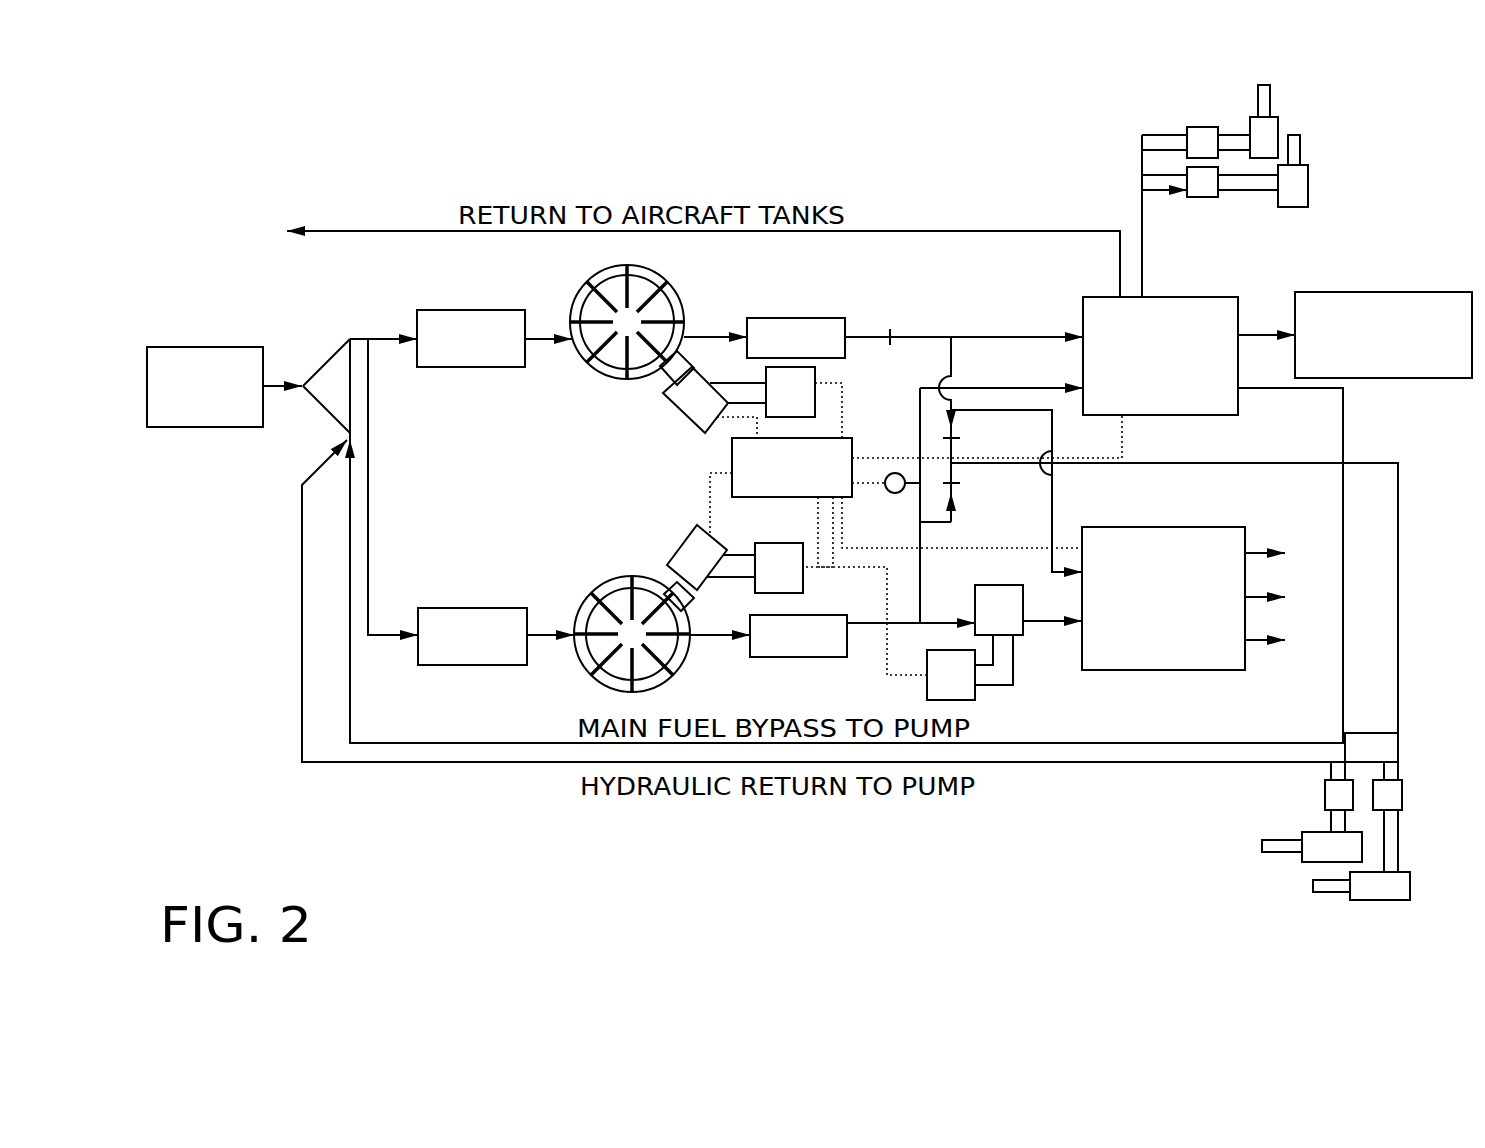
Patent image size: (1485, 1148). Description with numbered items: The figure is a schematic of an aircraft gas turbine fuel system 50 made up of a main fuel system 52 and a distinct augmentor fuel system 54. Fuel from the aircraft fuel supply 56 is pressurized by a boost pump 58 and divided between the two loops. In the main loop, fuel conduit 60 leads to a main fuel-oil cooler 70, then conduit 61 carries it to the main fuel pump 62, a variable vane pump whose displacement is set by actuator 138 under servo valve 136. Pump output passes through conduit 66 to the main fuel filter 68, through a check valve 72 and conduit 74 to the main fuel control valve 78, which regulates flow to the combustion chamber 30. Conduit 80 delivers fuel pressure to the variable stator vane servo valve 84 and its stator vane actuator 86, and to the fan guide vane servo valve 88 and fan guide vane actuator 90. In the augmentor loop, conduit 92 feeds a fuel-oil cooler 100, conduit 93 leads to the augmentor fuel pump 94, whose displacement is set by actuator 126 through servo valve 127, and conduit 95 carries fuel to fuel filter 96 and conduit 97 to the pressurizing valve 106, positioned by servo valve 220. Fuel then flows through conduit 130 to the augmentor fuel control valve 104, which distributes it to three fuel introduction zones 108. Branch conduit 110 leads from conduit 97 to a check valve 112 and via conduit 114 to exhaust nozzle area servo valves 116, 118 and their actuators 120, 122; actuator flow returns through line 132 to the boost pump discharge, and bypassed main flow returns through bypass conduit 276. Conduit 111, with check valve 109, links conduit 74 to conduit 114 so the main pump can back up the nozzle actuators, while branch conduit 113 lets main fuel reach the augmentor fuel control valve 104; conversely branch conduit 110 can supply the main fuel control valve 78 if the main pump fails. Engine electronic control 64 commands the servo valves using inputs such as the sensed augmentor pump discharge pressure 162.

The combustion chamber 30 is at (1402, 290).
The fuel system 50 is at (338, 158).
The main fuel system 52 is at (262, 290).
The augmentor fuel system 54 is at (265, 612).
The fuel supply 56 is at (177, 347).
The boost pump 58 is at (322, 408).
The fuel conduit 60 is at (382, 338).
The conduit 61 is at (538, 345).
The main fuel pump 62 is at (663, 283).
The engine electronic control 64 is at (732, 450).
The conduit 66 is at (702, 336).
The main fuel filter 68 is at (820, 318).
The main fuel-oil cooler 70 is at (478, 310).
The check valve 72 is at (852, 340).
The conduit 74 is at (995, 337).
The main fuel control valve 78 is at (1200, 296).
The conduit 80 is at (1143, 243).
The variable stator vane servo valve 84 is at (1200, 127).
The compressor stator vane actuator 86 is at (1280, 122).
The fan guide vane servo valve 88 is at (1203, 198).
The fan guide vane actuator 90 is at (1310, 180).
The conduit 92 is at (369, 478).
The conduit 93 is at (543, 630).
The augmentor fuel pump 94 is at (603, 582).
The conduit 95 is at (703, 634).
The fuel filter 96 is at (795, 657).
The conduit 97 is at (873, 622).
The fuel-oil cooler 100 is at (477, 606).
The augmentor fuel control valve 104 is at (1178, 527).
The pressurizing valve 106 is at (1012, 585).
The fuel introduction zones 108 is at (1250, 592).
The check valve 109 is at (953, 415).
The branch conduit 110 is at (920, 422).
The conduit 111 is at (953, 362).
The check valve 112 is at (953, 498).
The branch conduit 113 is at (1053, 498).
The conduit 114 is at (1215, 462).
The exhaust nozzle area servo valve 116 is at (1405, 795).
The exhaust nozzle area servo valve 118 is at (1325, 793).
The actuator 120 is at (1362, 900).
The actuator 122 is at (1308, 862).
The actuator 126 is at (690, 532).
The servo valve 127 is at (792, 542).
The conduit 130 is at (1035, 630).
The line 132 is at (390, 770).
The servo valve 136 is at (817, 372).
The actuator 138 is at (665, 405).
The augmentor pump discharge pressure 162 is at (903, 492).
The servo valve 220 is at (927, 688).
The bypass conduit 276 is at (413, 741).